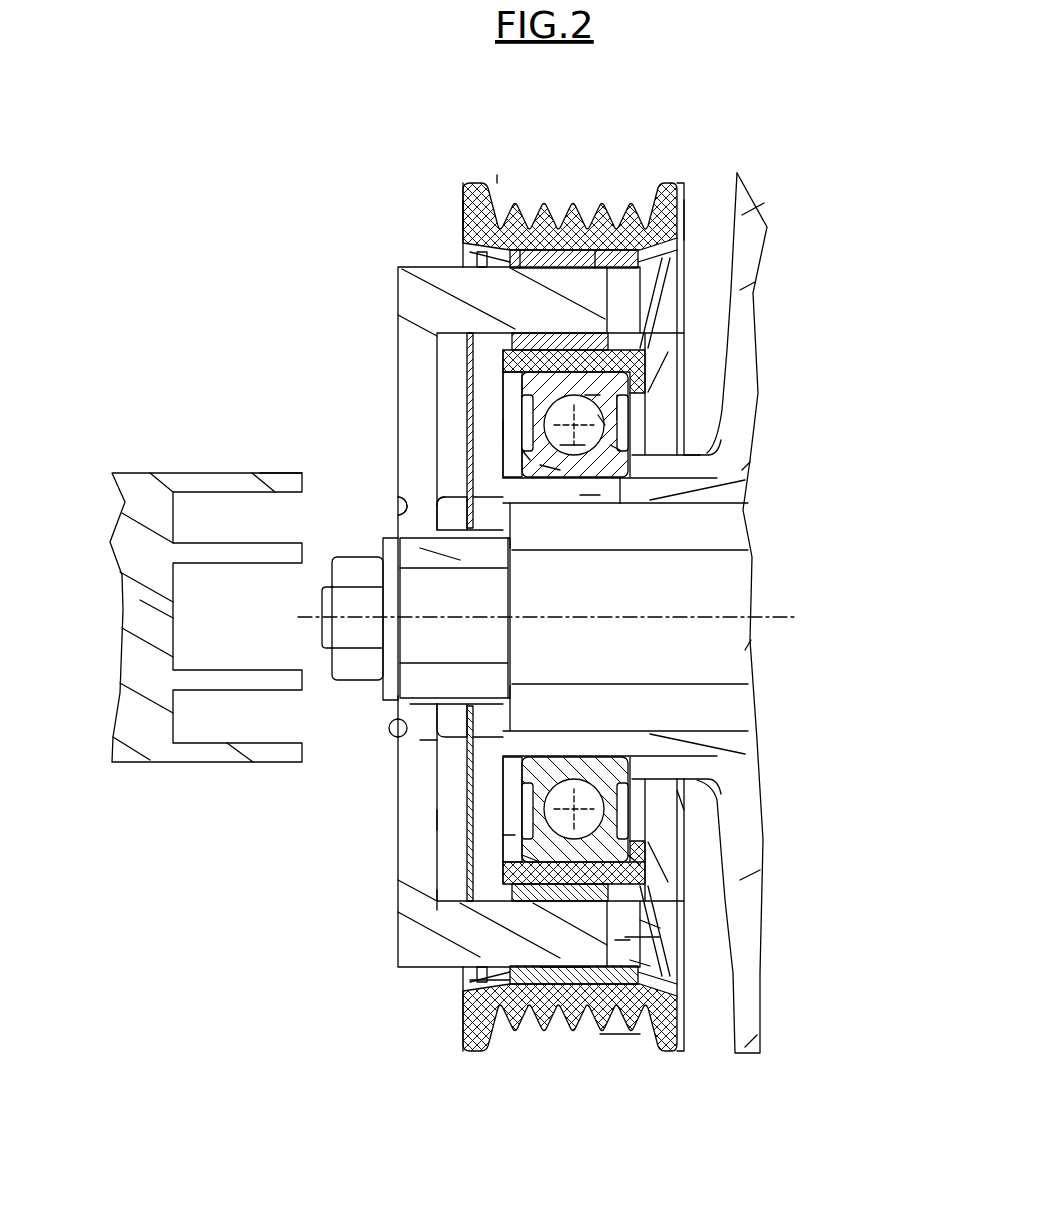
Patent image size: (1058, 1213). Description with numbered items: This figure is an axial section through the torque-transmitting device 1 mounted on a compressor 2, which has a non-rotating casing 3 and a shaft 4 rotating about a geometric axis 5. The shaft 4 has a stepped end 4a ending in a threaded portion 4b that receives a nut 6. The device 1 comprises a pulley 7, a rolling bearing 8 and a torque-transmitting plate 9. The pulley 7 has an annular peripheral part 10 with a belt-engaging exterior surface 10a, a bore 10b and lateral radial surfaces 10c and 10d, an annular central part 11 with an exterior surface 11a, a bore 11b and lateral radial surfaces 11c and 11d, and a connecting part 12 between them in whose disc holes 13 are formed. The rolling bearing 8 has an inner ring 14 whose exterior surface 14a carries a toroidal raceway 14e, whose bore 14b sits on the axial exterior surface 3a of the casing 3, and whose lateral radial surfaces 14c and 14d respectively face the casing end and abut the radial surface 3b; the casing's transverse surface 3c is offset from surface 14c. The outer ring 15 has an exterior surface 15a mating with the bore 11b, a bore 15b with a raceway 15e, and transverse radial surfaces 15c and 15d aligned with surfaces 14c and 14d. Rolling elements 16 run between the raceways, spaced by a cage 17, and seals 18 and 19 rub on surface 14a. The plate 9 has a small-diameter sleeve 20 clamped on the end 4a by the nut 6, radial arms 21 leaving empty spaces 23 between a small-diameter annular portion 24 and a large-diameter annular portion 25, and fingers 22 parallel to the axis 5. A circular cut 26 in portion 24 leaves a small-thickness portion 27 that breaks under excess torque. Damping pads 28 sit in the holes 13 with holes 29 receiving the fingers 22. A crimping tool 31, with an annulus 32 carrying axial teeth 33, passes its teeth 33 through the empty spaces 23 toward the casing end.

The torque-transmitting device 1 is at (496, 168).
The compressor 2 is at (778, 158).
The casing 3 is at (745, 405).
The axial exterior surface 3a is at (583, 735).
The radial surface 3b is at (640, 460).
The radial transverse surface 3c is at (432, 528).
The shaft 4 is at (735, 638).
The stepped end 4a is at (483, 642).
The threaded portion 4b is at (325, 624).
The geometric axis 5 is at (790, 612).
The nut 6 is at (338, 572).
The pulley 7 is at (490, 1003).
The rolling bearing 8 is at (700, 440).
The torque-transmitting plate 9 is at (418, 936).
The annular peripheral part 10 is at (690, 1010).
The exterior surface 10a is at (528, 185).
The bore 10b is at (598, 240).
The lateral radial surface 10c is at (455, 200).
The lateral radial surface 10d is at (686, 200).
The annular central part 11 is at (640, 876).
The exterior surface 11a is at (625, 946).
The bore 11b is at (512, 840).
The lateral radial surface 11c is at (530, 862).
The lateral radial surface 11d is at (632, 864).
The connecting part 12 is at (665, 900).
The holes 13 is at (620, 1040).
The inner ring 14 is at (680, 756).
The exterior surface 14a is at (518, 452).
The bore 14b is at (590, 497).
The lateral radial surface 14c is at (540, 465).
The lateral radial surface 14d is at (612, 448).
The raceway 14e is at (572, 445).
The outer ring 15 is at (650, 852).
The exterior surface 15a is at (620, 382).
The bore 15b is at (521, 410).
The transverse radial surface 15c is at (527, 400).
The transverse radial surface 15d is at (612, 397).
The raceway 15e is at (572, 400).
The rolling elements 16 is at (600, 400).
The cage 17 is at (600, 420).
The seal 18 is at (500, 432).
The seal 19 is at (675, 800).
The small-diameter sleeve 20 is at (392, 692).
The radial arms 21 is at (440, 822).
The fingers 22 is at (565, 972).
The empty spaces 23 is at (425, 750).
The small-diameter annular portion 24 is at (420, 706).
The large-diameter annular portion 25 is at (440, 906).
The cut 26 is at (402, 507).
The small-thickness portion 27 is at (425, 728).
The damping pads 28 is at (640, 964).
The holes 29 is at (650, 926).
The crimping tool 31 is at (203, 400).
The annulus 32 is at (157, 627).
The axial teeth 33 is at (277, 472).